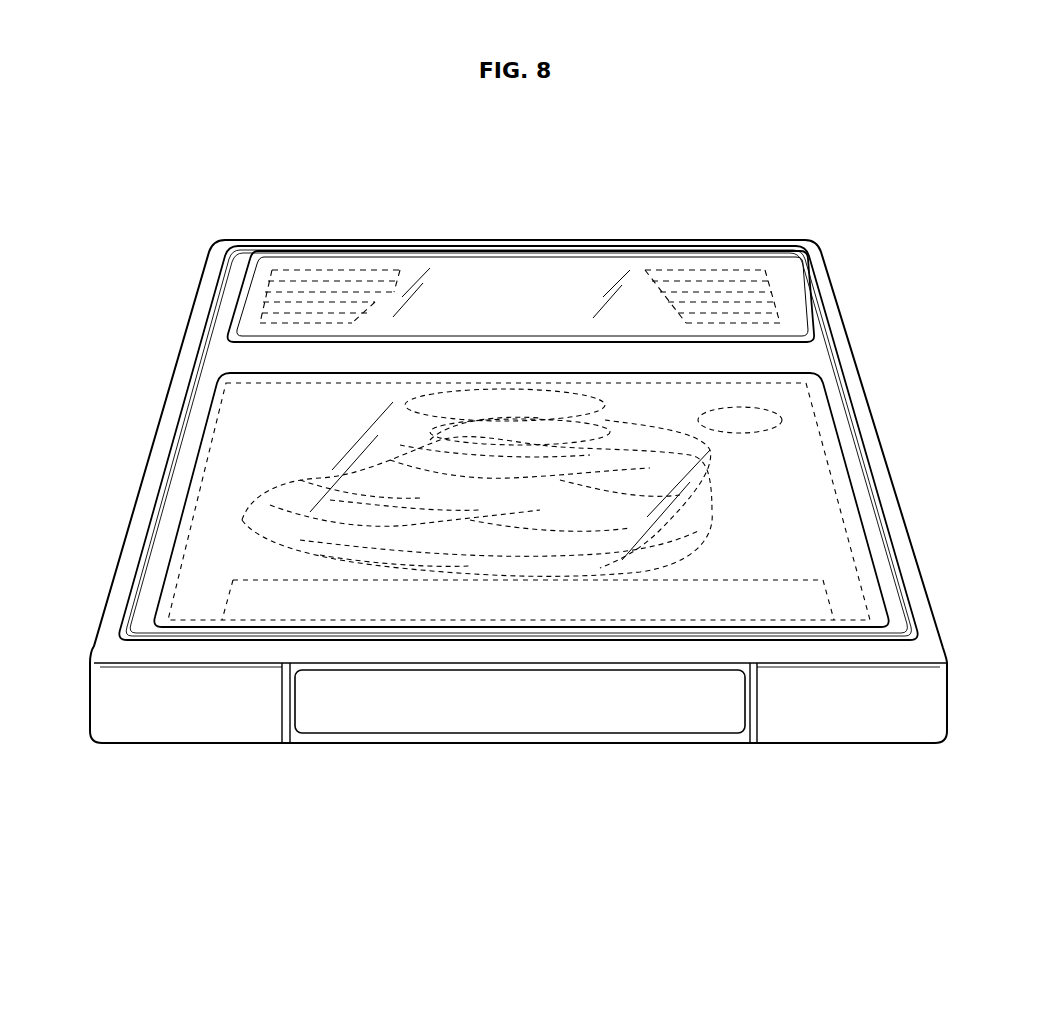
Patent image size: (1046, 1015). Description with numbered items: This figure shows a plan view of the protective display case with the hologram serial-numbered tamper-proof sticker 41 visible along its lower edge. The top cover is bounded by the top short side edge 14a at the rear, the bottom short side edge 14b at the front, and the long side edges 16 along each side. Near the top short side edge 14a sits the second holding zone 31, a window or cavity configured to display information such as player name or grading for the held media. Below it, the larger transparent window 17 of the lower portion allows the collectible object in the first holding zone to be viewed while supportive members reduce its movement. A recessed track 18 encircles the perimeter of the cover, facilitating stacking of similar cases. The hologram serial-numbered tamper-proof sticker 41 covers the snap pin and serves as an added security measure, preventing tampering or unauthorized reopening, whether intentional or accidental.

The top short side edge 14a is at (662, 238).
The bottom short side edge 14b is at (208, 717).
The long side edge 16 is at (170, 370).
The transparent window 17 is at (788, 503).
The recessed track 18 is at (228, 262).
The second holding zone 31 is at (738, 302).
The hologram serial-numbered tamper-proof sticker 41 is at (728, 727).